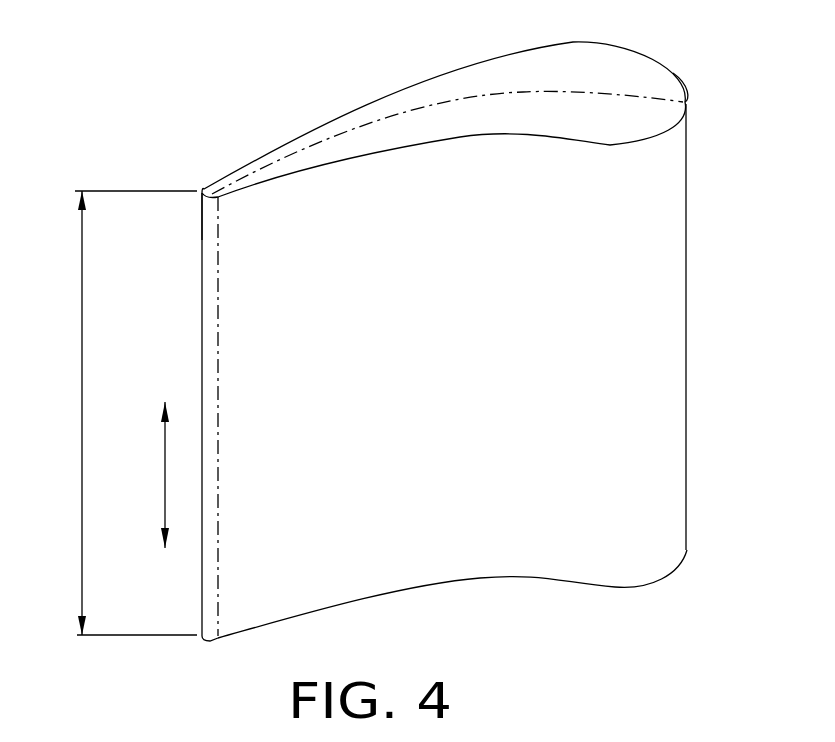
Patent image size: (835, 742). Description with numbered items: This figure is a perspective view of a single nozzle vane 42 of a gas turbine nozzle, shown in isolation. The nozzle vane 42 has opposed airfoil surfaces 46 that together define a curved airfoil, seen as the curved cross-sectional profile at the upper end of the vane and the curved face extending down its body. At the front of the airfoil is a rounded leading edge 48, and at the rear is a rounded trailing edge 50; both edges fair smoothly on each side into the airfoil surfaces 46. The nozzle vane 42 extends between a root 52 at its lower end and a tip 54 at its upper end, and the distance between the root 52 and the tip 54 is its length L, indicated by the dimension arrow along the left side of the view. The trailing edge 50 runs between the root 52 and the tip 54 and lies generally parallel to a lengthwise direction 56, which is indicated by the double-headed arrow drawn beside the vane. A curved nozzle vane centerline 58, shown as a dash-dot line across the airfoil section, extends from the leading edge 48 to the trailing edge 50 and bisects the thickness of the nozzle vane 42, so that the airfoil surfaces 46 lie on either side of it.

The nozzle vane 42 is at (232, 132).
The airfoil surfaces 46 is at (362, 105).
The leading edge 48 is at (687, 103).
The trailing edge 50 is at (205, 607).
The root 52 is at (352, 585).
The tip 54 is at (231, 208).
The lengthwise direction 56 is at (165, 465).
The nozzle vane centerline 58 is at (482, 98).
The length L is at (80, 407).